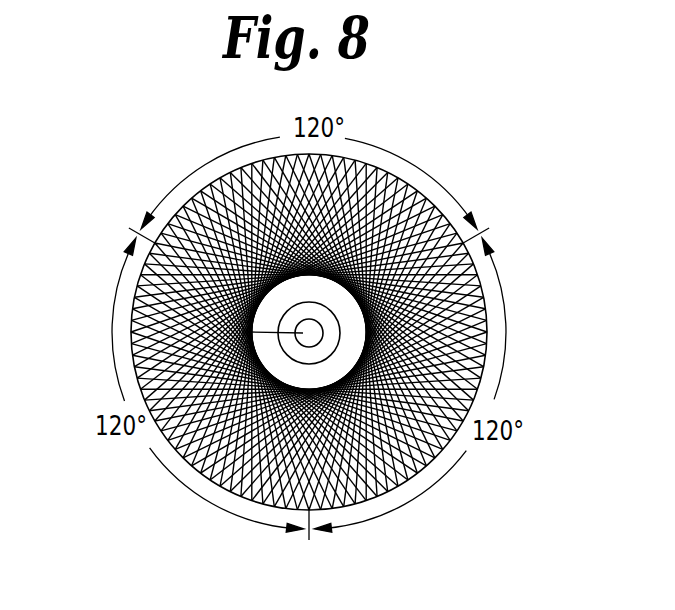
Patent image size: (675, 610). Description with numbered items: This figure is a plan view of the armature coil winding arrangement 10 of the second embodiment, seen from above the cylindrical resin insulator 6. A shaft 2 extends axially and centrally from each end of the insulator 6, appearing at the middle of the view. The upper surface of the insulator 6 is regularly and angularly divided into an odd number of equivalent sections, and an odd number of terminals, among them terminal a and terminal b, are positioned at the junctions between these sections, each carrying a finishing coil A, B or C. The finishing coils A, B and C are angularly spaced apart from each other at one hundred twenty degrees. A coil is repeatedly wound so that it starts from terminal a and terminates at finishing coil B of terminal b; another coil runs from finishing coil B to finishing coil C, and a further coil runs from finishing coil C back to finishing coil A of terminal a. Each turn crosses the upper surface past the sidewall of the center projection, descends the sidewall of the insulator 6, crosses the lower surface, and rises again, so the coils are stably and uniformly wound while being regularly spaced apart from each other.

The fan-shaped light guide assembly 10 is at (148, 493).
The shaft 2 is at (144, 274).
The cylindrical resin insulator 6 is at (327, 343).
The finishing coil A is at (309, 536).
The finishing coil B is at (487, 233).
The finishing coil C is at (146, 156).
The terminal a is at (296, 510).
The terminal b is at (460, 240).